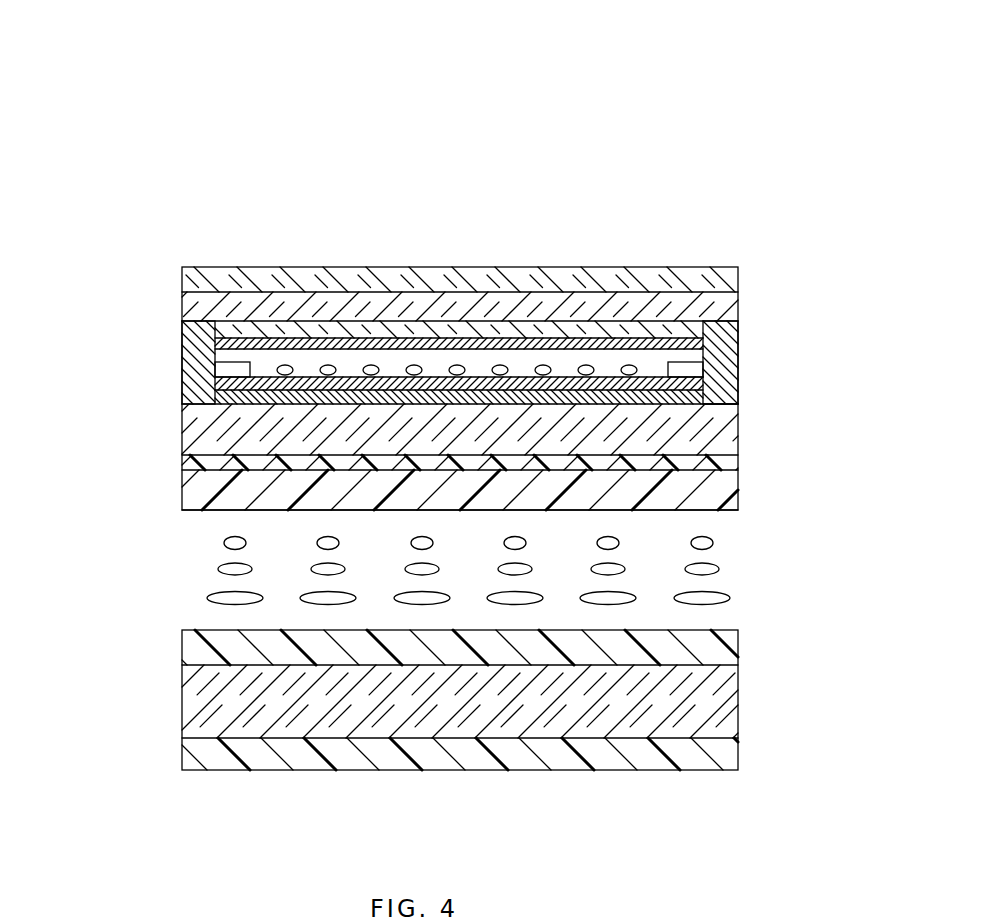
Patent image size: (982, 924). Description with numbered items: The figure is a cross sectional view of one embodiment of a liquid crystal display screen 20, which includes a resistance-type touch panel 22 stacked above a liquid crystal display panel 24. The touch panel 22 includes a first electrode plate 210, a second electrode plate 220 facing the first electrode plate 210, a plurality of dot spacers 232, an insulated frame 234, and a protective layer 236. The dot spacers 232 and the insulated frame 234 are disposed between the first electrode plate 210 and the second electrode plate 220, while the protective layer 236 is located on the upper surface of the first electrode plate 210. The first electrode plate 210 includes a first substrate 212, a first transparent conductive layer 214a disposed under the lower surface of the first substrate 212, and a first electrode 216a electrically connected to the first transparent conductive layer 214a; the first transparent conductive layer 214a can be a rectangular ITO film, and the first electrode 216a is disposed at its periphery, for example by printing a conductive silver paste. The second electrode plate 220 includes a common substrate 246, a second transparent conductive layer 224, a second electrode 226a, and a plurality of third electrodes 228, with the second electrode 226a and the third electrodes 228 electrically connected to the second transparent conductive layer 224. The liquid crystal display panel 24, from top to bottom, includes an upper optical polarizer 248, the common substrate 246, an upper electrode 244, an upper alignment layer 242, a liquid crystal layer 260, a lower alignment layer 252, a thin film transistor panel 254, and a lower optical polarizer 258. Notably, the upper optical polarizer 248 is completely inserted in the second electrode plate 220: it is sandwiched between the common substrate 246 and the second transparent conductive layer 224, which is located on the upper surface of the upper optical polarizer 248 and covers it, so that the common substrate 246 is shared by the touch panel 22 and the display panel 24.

The liquid crystal display screen 20 is at (456, 63).
The resistance-type touch panel 22 is at (57, 268).
The first electrode plate 210 is at (110, 262).
The first substrate 212 is at (215, 300).
The first transparent conductive layer 214a is at (228, 330).
The first electrode 216a is at (238, 345).
The insulated frame 234 is at (198, 352).
The dot spacers 232 is at (272, 355).
The third electrodes 228 is at (690, 370).
The second electrode plate 220 is at (112, 372).
The second electrode 226a is at (226, 383).
The second transparent conductive layer 224 is at (226, 397).
The common substrate 246 is at (192, 432).
The protective layer 236 is at (700, 284).
The upper optical polarizer 248 is at (700, 400).
The upper electrode 244 is at (728, 463).
The upper alignment layer 242 is at (720, 492).
The liquid crystal display panel 24 is at (828, 375).
The liquid crystal layer 260 is at (727, 560).
The lower alignment layer 252 is at (718, 652).
The thin film transistor panel 254 is at (715, 700).
The lower optical polarizer 258 is at (718, 760).